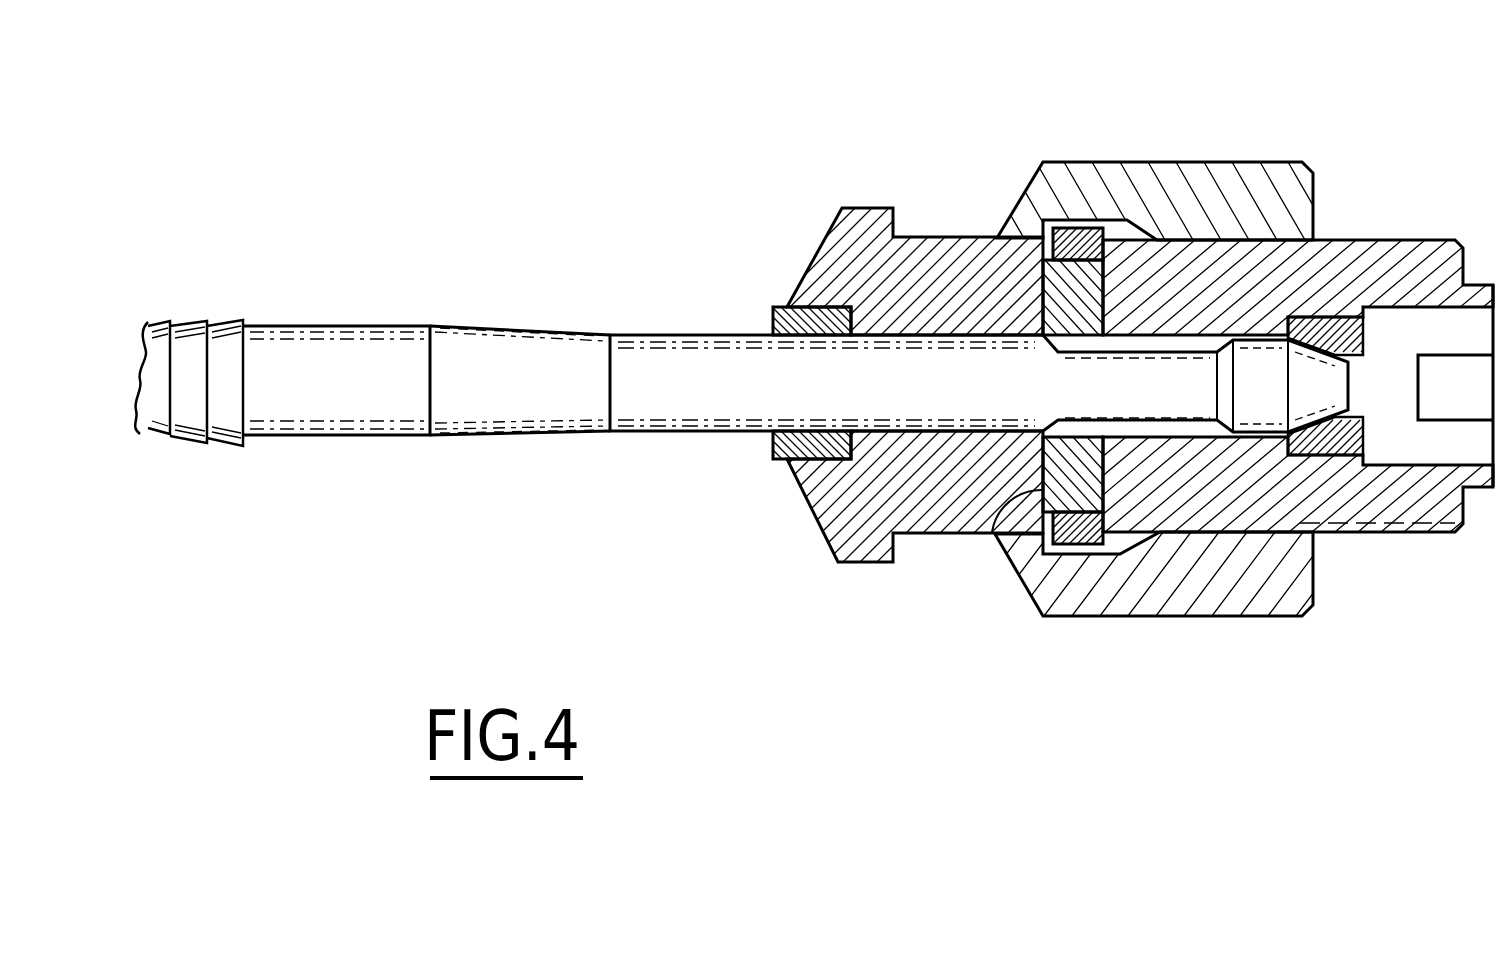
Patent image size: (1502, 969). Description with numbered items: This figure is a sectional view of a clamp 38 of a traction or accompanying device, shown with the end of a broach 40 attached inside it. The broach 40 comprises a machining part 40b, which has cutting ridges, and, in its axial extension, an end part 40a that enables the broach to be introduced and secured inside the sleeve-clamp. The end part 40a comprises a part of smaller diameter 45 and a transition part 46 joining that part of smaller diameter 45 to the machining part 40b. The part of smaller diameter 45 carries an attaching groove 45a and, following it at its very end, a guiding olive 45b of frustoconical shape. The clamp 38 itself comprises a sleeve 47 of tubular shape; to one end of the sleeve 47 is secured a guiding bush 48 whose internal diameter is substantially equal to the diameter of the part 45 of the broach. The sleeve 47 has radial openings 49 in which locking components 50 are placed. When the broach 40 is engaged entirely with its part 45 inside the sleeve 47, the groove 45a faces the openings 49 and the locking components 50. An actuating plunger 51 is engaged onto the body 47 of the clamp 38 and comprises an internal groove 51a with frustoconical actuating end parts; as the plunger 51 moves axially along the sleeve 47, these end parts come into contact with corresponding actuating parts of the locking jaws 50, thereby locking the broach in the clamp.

The clamp 38 is at (1092, 128).
The broach 40 is at (321, 265).
The end part 40a is at (544, 292).
The machining part 40b is at (199, 323).
The part of smaller diameter 45 is at (693, 338).
The attaching groove 45a is at (1163, 355).
The guiding olive 45b is at (1262, 350).
The transition part 46 is at (472, 333).
The sleeve 47 is at (911, 247).
The guiding bush 48 is at (782, 447).
The radial openings 49 is at (993, 535).
The locking components 50 is at (1071, 273).
The actuating plunger 51 is at (1263, 597).
The internal groove 51a is at (1148, 237).